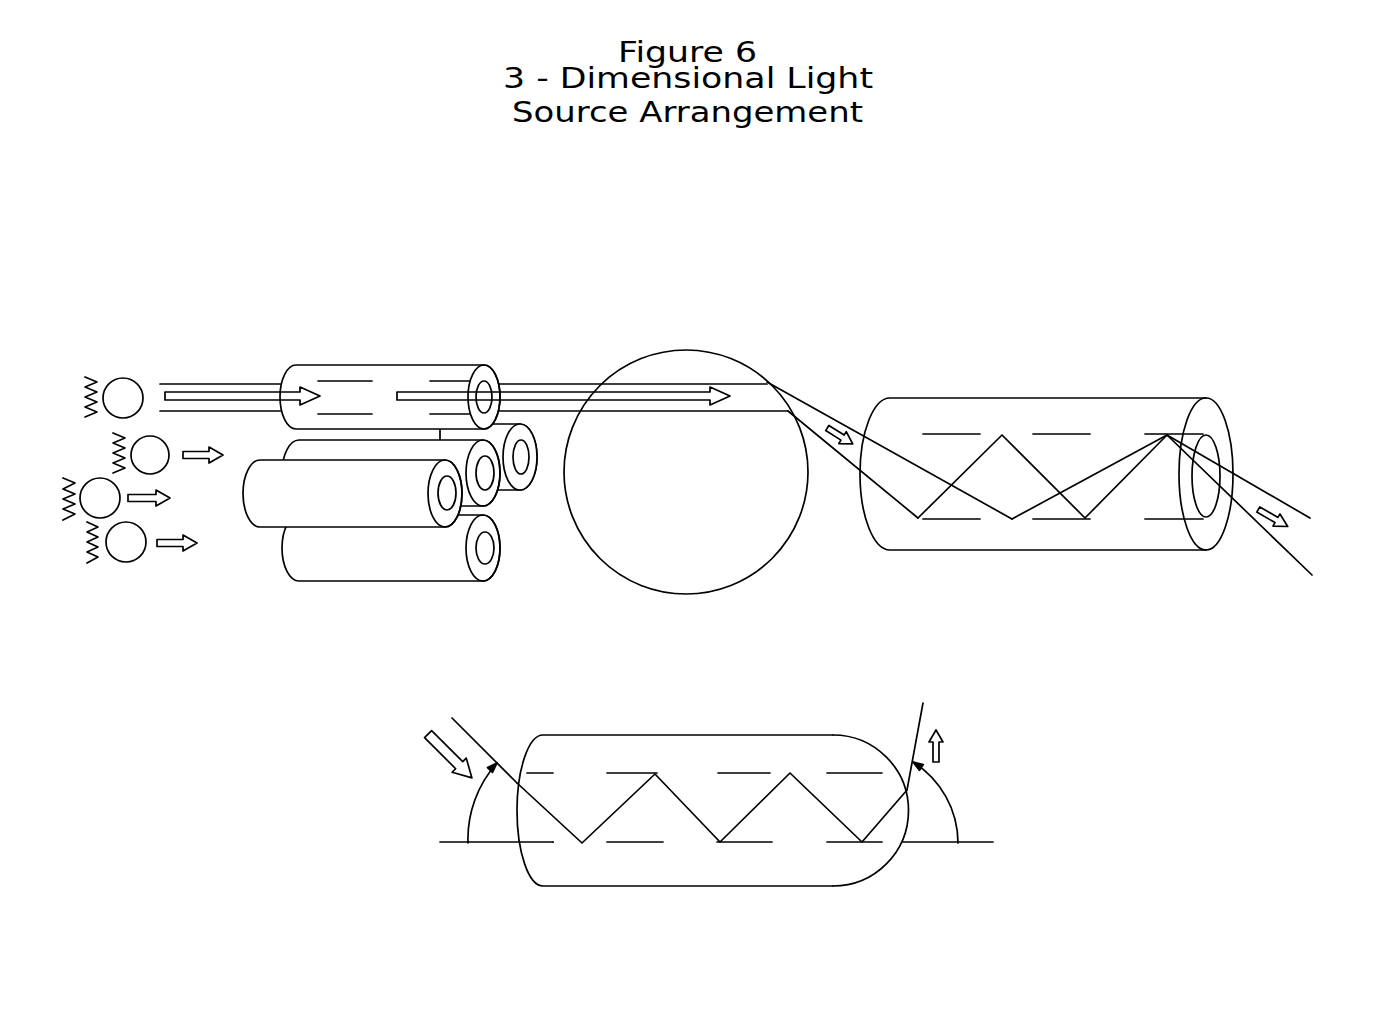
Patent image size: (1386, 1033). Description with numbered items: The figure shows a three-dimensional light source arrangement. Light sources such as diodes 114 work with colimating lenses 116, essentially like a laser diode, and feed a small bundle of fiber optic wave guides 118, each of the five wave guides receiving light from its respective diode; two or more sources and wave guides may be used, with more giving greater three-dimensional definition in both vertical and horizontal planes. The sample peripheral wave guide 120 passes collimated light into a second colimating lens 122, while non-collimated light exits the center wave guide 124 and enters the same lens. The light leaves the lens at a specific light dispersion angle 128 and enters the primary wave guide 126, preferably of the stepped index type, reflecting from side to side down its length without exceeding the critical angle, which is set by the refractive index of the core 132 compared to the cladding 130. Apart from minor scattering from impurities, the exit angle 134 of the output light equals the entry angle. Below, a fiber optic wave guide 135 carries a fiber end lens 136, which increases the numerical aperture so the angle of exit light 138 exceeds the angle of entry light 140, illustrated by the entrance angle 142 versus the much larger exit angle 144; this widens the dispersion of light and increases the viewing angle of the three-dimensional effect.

The diodes 114 is at (88, 370).
The colimating lenses 116 is at (137, 380).
The bundle of fiber optic wave guides 118 is at (373, 580).
The peripheral wave guide 120 is at (340, 366).
The second colimating lens 122 is at (640, 373).
The center wave guide 124 is at (500, 497).
The primary wave guide 126 is at (955, 398).
The light dispersion angle 128 is at (812, 403).
The cladding 130 is at (1157, 532).
The core 132 is at (1053, 507).
The exit angle 134 is at (1247, 480).
The fiber optic wave guide 135 is at (670, 735).
The fiber end lens 136 is at (892, 860).
The exit light 138 is at (922, 717).
The entry light 140 is at (477, 738).
The angle 142 is at (473, 807).
The exit angle 144 is at (953, 807).